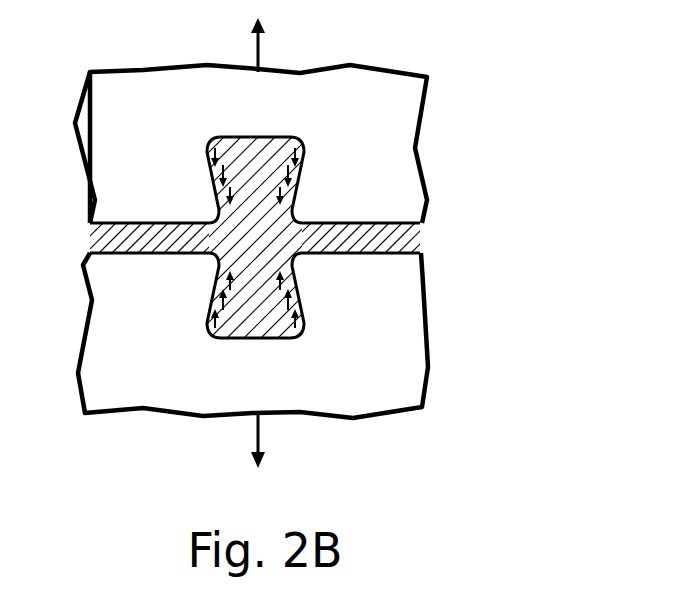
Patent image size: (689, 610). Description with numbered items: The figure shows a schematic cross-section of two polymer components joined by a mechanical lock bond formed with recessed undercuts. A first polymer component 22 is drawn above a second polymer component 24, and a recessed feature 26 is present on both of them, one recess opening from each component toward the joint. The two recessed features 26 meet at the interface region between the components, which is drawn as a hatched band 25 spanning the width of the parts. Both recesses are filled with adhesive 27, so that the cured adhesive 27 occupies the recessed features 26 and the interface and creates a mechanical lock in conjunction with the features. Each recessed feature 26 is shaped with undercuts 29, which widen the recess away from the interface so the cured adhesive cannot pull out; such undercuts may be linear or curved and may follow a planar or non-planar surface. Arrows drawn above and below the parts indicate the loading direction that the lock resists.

The first polymer component 22 is at (129, 183).
The second polymer component 24 is at (132, 302).
The intermediate layer 25 is at (438, 238).
The recessed feature 26 is at (243, 172).
The adhesive 27 is at (258, 247).
The undercuts 29 is at (302, 182).